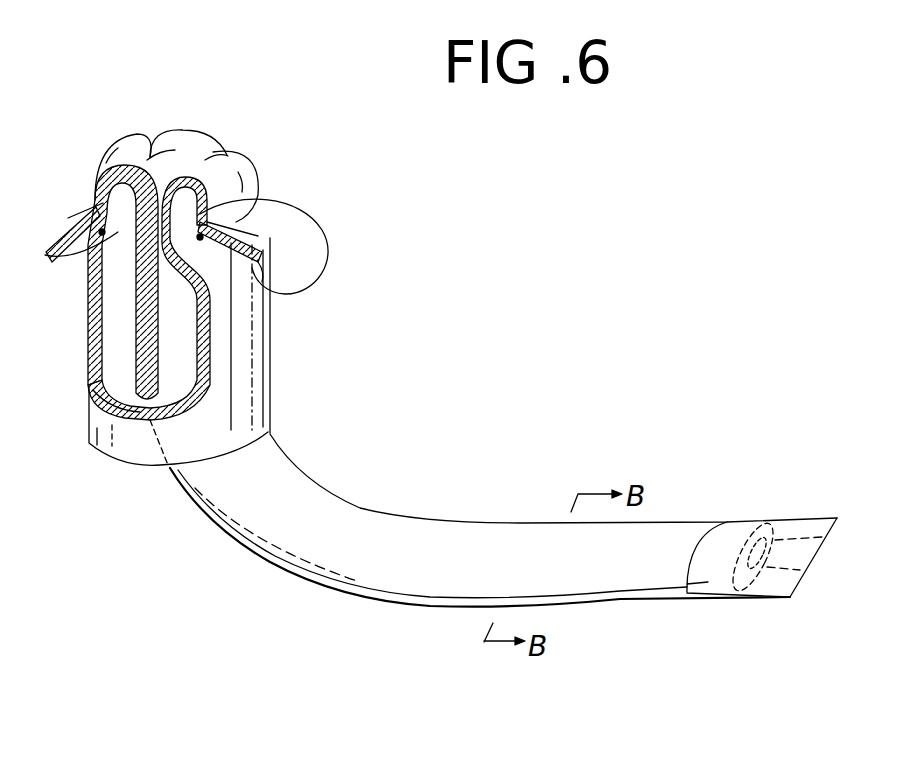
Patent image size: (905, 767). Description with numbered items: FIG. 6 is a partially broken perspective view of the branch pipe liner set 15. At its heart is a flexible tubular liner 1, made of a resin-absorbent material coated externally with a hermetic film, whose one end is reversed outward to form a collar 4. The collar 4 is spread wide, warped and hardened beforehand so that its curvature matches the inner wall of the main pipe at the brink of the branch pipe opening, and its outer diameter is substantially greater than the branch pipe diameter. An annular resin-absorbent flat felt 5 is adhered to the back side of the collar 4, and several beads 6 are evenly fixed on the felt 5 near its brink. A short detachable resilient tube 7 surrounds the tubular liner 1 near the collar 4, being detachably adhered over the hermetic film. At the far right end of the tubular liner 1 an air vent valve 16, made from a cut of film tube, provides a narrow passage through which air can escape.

The flexible tubular liner 1 is at (352, 502).
The collar 4 is at (272, 218).
The annular resin-absorbent flat felt 5 is at (56, 256).
The beads 6 is at (198, 250).
The detachable resilient tube 7 is at (97, 426).
The branch pipe liner set 15 is at (373, 287).
The air vent valve 16 is at (797, 562).